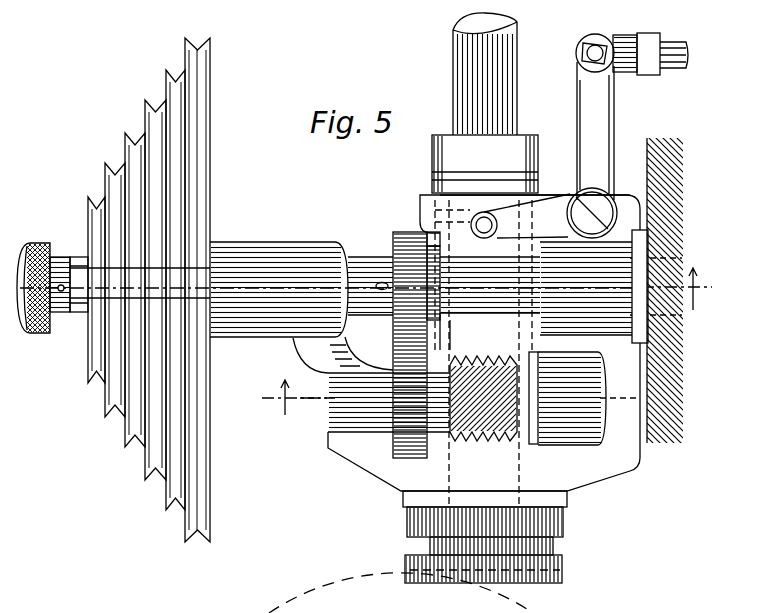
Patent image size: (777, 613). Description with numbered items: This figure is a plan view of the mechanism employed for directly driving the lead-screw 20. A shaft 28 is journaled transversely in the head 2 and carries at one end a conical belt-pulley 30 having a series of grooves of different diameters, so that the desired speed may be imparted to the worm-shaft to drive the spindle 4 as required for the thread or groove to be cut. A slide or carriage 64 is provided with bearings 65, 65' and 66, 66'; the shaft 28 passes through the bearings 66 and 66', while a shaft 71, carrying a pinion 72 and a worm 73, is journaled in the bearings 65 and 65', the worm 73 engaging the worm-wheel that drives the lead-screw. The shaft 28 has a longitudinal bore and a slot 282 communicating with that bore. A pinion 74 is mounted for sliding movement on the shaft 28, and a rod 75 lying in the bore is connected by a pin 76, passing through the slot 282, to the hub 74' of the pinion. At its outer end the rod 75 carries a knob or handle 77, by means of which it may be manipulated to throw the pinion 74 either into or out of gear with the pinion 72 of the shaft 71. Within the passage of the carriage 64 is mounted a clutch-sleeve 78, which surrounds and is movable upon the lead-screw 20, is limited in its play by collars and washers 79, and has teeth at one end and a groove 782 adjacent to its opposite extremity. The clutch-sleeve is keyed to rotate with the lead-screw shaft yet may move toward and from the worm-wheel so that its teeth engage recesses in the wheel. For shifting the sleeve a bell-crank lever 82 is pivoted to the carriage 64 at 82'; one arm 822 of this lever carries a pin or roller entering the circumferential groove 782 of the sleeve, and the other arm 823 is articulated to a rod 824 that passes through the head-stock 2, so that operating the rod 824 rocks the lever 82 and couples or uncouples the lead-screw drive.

The head 2 is at (655, 182).
The spindle 4 is at (483, 341).
The lead-screw 20 is at (517, 65).
The shaft 28 is at (355, 258).
The slot 282 is at (381, 282).
The conical belt-pulley 30 is at (197, 163).
The slide or carriage 64 is at (484, 389).
The bearing 65 is at (367, 403).
The bearing 65' is at (567, 398).
The bearing 66 is at (279, 277).
The bearing 66' is at (594, 286).
The shaft 71 is at (320, 386).
The pinion 72 is at (405, 458).
The worm 73 is at (483, 418).
The pinion 74 is at (483, 283).
The hub 74' is at (467, 334).
The rod 75 is at (107, 298).
The pin 76 is at (433, 237).
The knob or handle 77 is at (43, 240).
The clutch-sleeve 78 is at (532, 192).
The groove 782 is at (462, 218).
The collars and washers 79 is at (490, 190).
The bell-crank lever 82 is at (617, 117).
The pivot 82' is at (592, 198).
The arm 822 is at (568, 222).
The arm 823 is at (592, 97).
The rod 824 is at (684, 45).